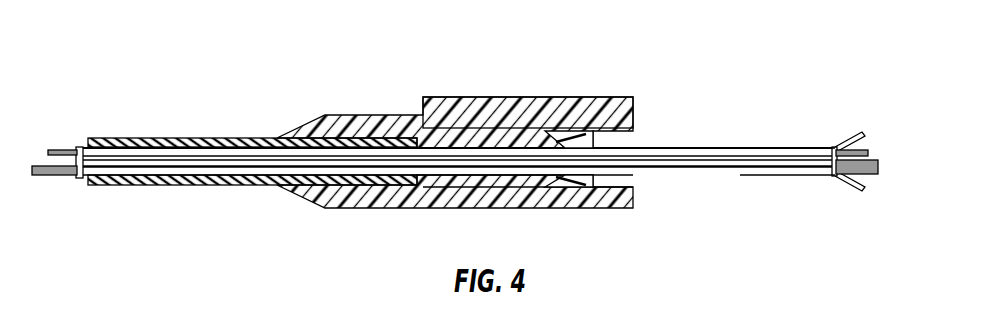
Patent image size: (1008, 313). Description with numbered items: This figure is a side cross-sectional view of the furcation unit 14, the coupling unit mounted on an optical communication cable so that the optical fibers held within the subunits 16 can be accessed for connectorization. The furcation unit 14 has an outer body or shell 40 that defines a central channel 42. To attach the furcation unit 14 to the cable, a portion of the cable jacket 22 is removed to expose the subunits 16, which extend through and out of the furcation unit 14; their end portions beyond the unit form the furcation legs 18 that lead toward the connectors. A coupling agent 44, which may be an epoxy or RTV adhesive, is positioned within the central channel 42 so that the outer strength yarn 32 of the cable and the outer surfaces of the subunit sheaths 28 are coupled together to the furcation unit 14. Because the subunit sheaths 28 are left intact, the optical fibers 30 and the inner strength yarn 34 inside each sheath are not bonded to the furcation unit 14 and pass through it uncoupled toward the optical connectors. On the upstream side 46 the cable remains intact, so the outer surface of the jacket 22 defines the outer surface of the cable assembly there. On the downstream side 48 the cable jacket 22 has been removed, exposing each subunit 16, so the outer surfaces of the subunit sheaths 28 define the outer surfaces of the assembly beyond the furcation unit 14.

The furcation unit 14 is at (469, 141).
The subunits 16 is at (80, 148).
The furcation legs 18 is at (755, 120).
The cable jacket 22 is at (136, 138).
The subunit sheath 28 is at (742, 151).
The optical fibers 30 is at (58, 152).
The outer strength yarn 32 is at (200, 138).
The inner strength yarn 34 is at (862, 132).
The shell 40 is at (622, 97).
The central channel 42 is at (530, 188).
The coupling agent 44 is at (444, 103).
The upstream side 46 is at (189, 54).
The downstream side 48 is at (831, 120).